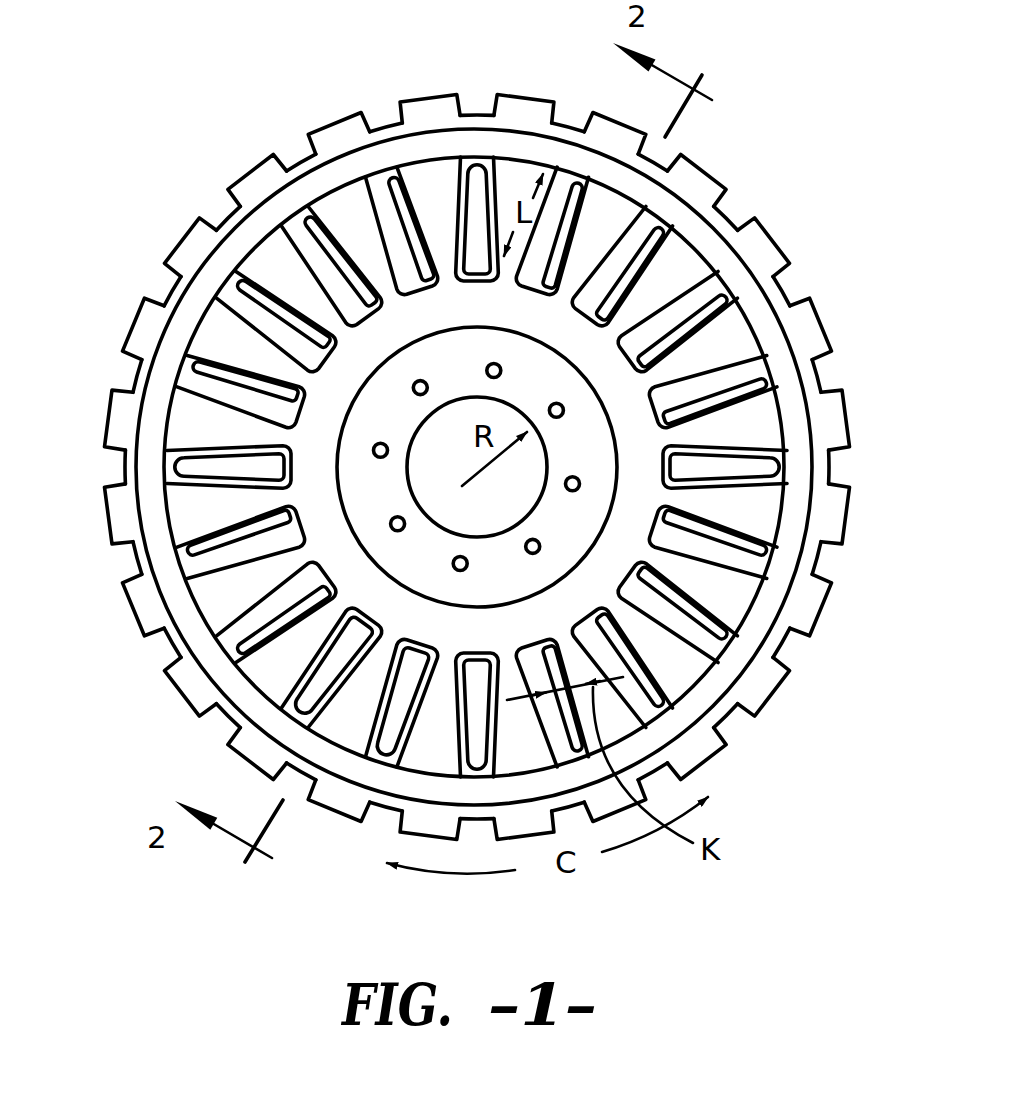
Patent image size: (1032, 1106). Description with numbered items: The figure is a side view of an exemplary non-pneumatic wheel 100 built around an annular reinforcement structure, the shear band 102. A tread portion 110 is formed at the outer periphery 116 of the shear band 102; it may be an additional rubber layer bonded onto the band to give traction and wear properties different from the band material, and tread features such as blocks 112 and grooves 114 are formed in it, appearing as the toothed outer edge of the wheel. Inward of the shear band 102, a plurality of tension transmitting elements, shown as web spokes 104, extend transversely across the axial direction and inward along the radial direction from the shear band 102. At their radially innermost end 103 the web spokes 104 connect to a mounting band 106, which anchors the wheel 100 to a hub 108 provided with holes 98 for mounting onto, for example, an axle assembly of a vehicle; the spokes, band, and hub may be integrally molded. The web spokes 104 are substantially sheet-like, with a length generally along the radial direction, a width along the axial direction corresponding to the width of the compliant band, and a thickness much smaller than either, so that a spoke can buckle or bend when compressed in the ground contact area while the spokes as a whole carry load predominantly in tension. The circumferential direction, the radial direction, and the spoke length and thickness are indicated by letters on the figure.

The holes 98 is at (548, 546).
The non-pneumatic wheel 100 is at (212, 90).
The shear band 102 is at (735, 287).
The radially innermost end 103 is at (466, 272).
The web spokes 104 is at (202, 405).
The mounting band 106 is at (347, 560).
The hub 108 is at (575, 512).
The tread portion 110 is at (695, 178).
The blocks 112 is at (321, 116).
The grooves 114 is at (211, 204).
The outer periphery 116 is at (742, 679).